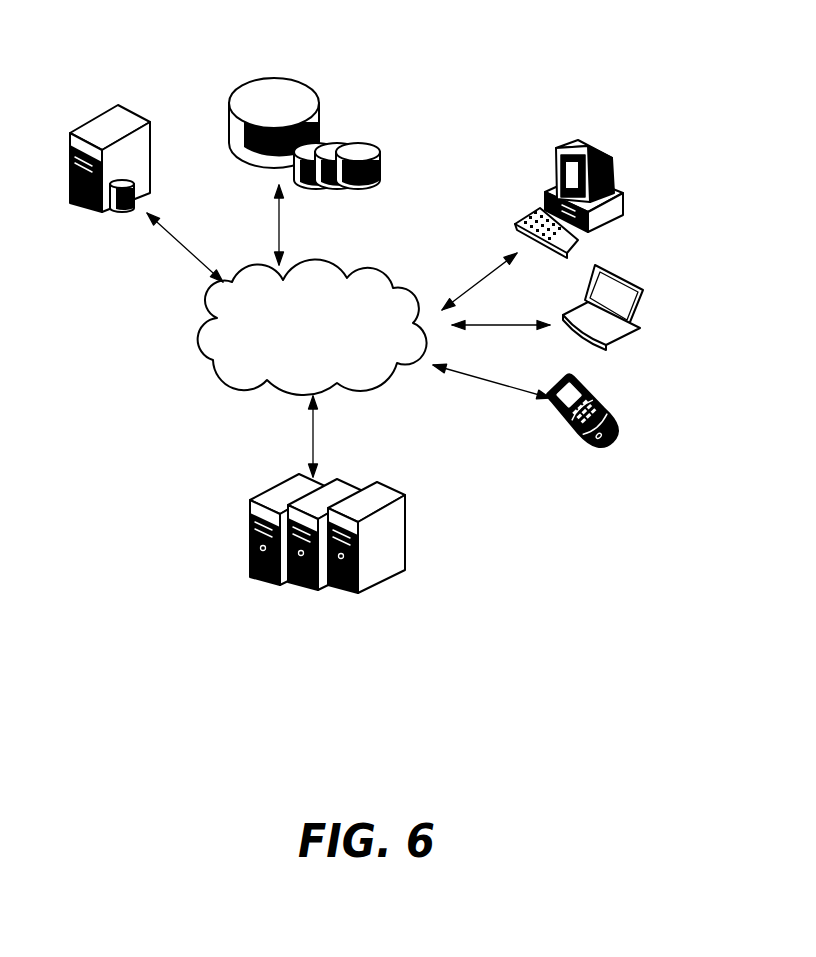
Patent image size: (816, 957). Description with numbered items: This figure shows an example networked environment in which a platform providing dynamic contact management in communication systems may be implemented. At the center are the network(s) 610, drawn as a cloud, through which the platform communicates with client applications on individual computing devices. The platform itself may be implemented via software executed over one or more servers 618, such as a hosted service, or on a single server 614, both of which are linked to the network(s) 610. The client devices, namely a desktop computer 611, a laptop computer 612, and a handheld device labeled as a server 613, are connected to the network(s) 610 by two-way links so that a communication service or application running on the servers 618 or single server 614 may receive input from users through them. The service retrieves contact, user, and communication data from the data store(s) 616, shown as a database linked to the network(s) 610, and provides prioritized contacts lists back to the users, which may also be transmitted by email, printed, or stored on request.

The network(s) 610 is at (317, 255).
The desktop computer 611 is at (608, 135).
The laptop computer 612 is at (642, 263).
The server 613 is at (615, 382).
The single server 614 is at (118, 218).
The data store(s) 616 is at (290, 57).
The servers 618 is at (277, 482).